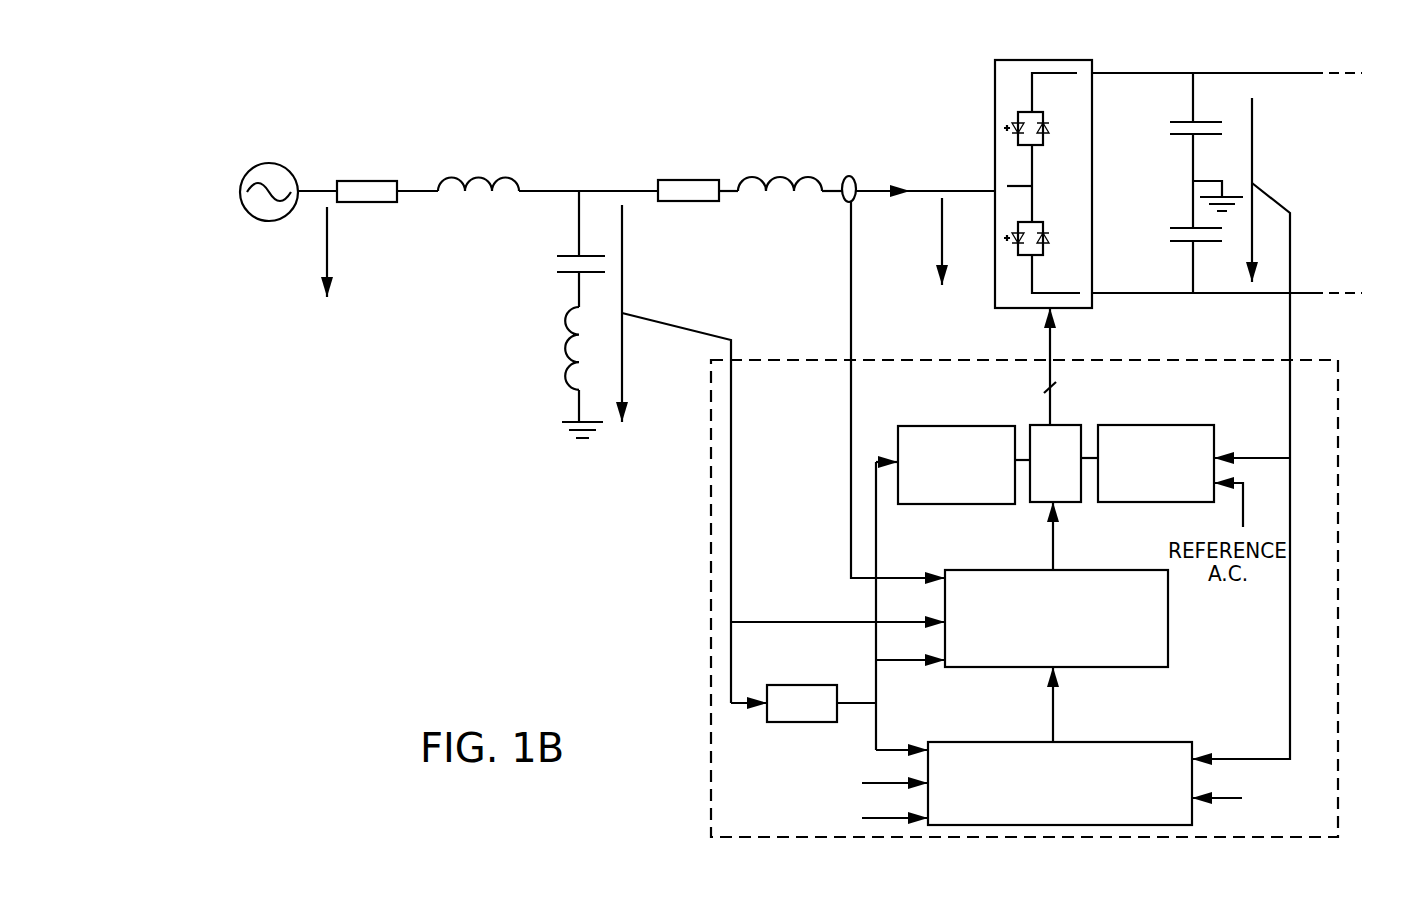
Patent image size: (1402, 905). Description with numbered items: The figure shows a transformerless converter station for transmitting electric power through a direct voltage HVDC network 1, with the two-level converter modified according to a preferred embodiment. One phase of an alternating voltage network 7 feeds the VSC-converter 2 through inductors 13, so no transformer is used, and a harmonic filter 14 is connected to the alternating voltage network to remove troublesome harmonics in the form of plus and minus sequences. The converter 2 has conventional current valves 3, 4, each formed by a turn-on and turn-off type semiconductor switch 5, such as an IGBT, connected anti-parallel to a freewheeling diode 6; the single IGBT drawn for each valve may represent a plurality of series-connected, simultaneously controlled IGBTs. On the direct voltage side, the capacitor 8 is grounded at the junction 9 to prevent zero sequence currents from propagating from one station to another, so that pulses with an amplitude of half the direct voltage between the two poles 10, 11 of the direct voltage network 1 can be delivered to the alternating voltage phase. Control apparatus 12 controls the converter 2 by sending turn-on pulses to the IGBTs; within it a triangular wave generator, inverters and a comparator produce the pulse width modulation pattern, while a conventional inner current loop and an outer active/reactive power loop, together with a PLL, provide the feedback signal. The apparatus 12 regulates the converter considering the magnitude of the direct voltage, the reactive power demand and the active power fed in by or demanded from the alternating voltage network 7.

The direct voltage HVDC network 1 is at (1224, 73).
The VSC-converter 2 is at (1036, 166).
The current valve 3 is at (998, 147).
The current valve 4 is at (1052, 253).
The semiconductor switch 5 is at (1013, 118).
The freewheeling diode 6 is at (1050, 128).
The alternating voltage network 7 is at (296, 173).
The capacitor 8 is at (1210, 135).
The junction 9 is at (1193, 181).
The pole 10 is at (1290, 73).
The pole 11 is at (1312, 294).
The control apparatus 12 is at (1024, 598).
The inductor 13 is at (509, 177).
The harmonic filter 14 is at (537, 322).